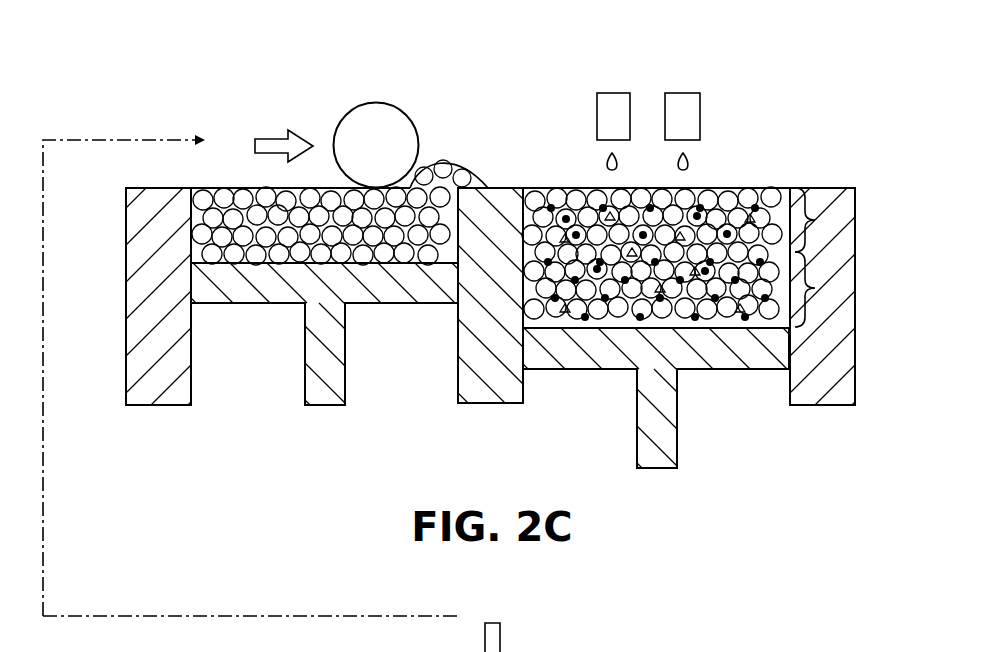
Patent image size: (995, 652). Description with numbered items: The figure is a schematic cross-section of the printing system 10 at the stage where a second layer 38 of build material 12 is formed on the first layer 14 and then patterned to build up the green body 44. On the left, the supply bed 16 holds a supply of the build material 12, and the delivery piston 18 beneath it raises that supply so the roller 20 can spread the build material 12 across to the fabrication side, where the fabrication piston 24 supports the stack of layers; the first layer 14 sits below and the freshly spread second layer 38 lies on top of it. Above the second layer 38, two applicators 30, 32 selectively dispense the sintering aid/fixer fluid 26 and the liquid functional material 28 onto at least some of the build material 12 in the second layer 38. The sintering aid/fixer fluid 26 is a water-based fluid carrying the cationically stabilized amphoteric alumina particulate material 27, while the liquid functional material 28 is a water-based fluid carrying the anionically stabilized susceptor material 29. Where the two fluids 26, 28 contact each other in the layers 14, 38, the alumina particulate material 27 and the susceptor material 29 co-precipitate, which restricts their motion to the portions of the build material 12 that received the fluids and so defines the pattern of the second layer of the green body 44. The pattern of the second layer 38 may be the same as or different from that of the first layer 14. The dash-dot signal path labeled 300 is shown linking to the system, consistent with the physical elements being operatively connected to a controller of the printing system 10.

The printing system 10 is at (171, 114).
The build material 12 is at (218, 190).
The first layer 14 is at (686, 284).
The supply bed 16 is at (213, 213).
The delivery piston 18 is at (327, 378).
The roller 20 is at (372, 130).
The fabrication piston 24 is at (657, 435).
The sintering aid/fixer fluid 26 is at (691, 163).
The cationically stabilized amphoteric alumina particulate material 27 is at (773, 188).
The liquid functional material 28 is at (604, 163).
The anionically stabilized susceptor material 29 is at (537, 195).
The applicator 30 is at (683, 108).
The applicator 32 is at (612, 108).
The second layer 38 is at (685, 219).
The green body 44 is at (742, 178).
The controller 300 is at (43, 512).